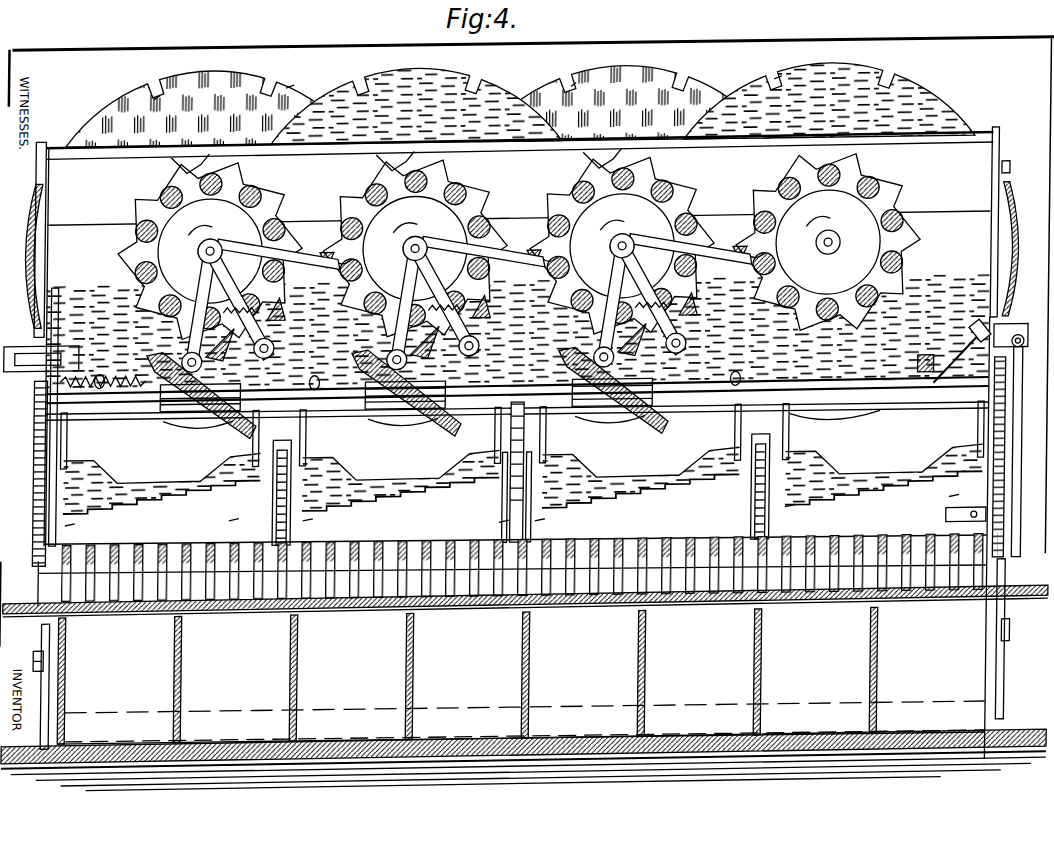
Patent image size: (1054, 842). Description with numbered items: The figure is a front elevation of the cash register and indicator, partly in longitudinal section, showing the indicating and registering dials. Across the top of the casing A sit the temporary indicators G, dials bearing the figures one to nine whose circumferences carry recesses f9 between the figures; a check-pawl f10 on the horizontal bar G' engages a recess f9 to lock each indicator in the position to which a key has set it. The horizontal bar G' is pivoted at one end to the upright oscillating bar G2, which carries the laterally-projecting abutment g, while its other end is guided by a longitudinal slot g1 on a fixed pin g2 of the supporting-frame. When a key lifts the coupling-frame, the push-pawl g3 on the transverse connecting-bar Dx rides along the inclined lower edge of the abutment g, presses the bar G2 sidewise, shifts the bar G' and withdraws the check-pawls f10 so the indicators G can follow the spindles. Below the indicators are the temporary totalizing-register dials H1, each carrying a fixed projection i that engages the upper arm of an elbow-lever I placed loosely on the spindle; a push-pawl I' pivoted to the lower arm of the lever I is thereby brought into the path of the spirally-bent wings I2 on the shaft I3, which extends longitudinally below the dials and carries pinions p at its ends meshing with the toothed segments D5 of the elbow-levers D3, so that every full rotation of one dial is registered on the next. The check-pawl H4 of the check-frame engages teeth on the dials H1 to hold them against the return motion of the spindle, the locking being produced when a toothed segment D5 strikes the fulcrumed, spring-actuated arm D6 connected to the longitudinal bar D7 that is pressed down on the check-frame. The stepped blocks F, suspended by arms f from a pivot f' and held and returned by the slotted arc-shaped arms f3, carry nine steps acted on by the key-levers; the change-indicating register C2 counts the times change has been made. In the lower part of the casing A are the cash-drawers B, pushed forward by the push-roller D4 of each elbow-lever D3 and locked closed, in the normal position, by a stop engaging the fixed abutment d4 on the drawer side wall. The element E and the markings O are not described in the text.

The casing A is at (527, 327).
The temporary indicator G is at (518, 225).
The longitudinal bar D7 is at (519, 132).
The recesses f9 is at (1020, 244).
The check-pawl H4 is at (380, 160).
The temporary totalizing-register dial H1 is at (150, 205).
The fixed projection i is at (541, 247).
The elbow-lever I is at (472, 296).
The push-pawl I' is at (450, 303).
The spirally-bent wings I2 is at (407, 400).
The shaft I3 is at (130, 395).
The arms f is at (522, 435).
The pivot f' is at (529, 430).
The slotted arc-shaped arms f3 is at (520, 511).
The column E is at (521, 480).
The stepped block F is at (523, 485).
The transverse connecting-bar Dx is at (518, 556).
The change-indicating register C2 is at (511, 500).
The fulcrumed spring-actuated arm D6 is at (1020, 277).
The toothed segment D5 is at (47, 521).
The abutment g is at (1006, 450).
The longitudinal slot g1 is at (34, 380).
The fixed pin g2 is at (55, 345).
The push-pawl g3 is at (1006, 528).
The upright oscillating bar G2 is at (1008, 502).
The horizontal bar G' is at (1028, 344).
The pinions p is at (1027, 393).
The check-pawl f10 is at (932, 360).
The opening O is at (417, 377).
The cash-drawer B is at (524, 698).
The push-roller D4 is at (524, 721).
The elbow-lever D3 is at (46, 700).
The fixed abutment d4 is at (32, 651).